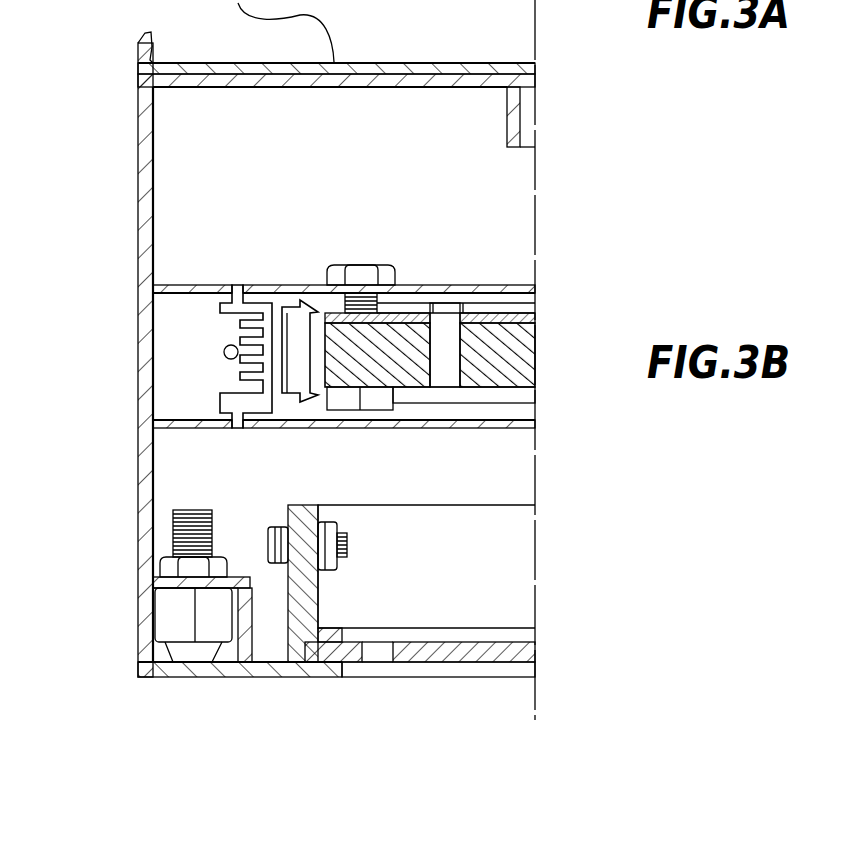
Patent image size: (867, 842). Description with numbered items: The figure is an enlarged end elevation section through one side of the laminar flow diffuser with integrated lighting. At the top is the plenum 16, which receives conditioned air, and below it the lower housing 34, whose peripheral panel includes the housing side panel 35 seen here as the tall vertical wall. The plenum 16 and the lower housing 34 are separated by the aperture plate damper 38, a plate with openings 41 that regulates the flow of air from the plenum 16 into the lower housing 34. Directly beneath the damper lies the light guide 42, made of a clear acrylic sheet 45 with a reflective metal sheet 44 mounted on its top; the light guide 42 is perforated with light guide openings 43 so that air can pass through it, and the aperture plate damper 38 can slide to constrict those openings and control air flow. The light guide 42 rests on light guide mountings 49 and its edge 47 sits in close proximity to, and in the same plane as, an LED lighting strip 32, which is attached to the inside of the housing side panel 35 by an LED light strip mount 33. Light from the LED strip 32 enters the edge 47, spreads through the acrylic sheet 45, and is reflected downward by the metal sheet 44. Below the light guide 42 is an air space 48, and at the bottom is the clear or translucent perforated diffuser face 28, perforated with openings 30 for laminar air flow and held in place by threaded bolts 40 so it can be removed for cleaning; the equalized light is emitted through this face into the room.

The plenum 16 is at (128, 124).
The perforated diffuser face 28 is at (470, 660).
The openings 30 is at (378, 652).
The LED lighting strips 32 is at (295, 367).
The LED light strip mounts 33 is at (230, 343).
The lower housing 34 is at (127, 572).
The housing side panels 35 is at (147, 465).
The aperture plate damper 38 is at (495, 312).
The threaded bolts 40 is at (167, 622).
The openings 41 is at (443, 308).
The light guide 42 is at (545, 364).
The light guide openings 43 is at (445, 365).
The reflective metal sheet 44 is at (537, 340).
The clear acrylic sheet 45 is at (472, 380).
The edge 47 is at (325, 345).
The air space 48 is at (510, 573).
The light guide mountings 49 is at (398, 267).